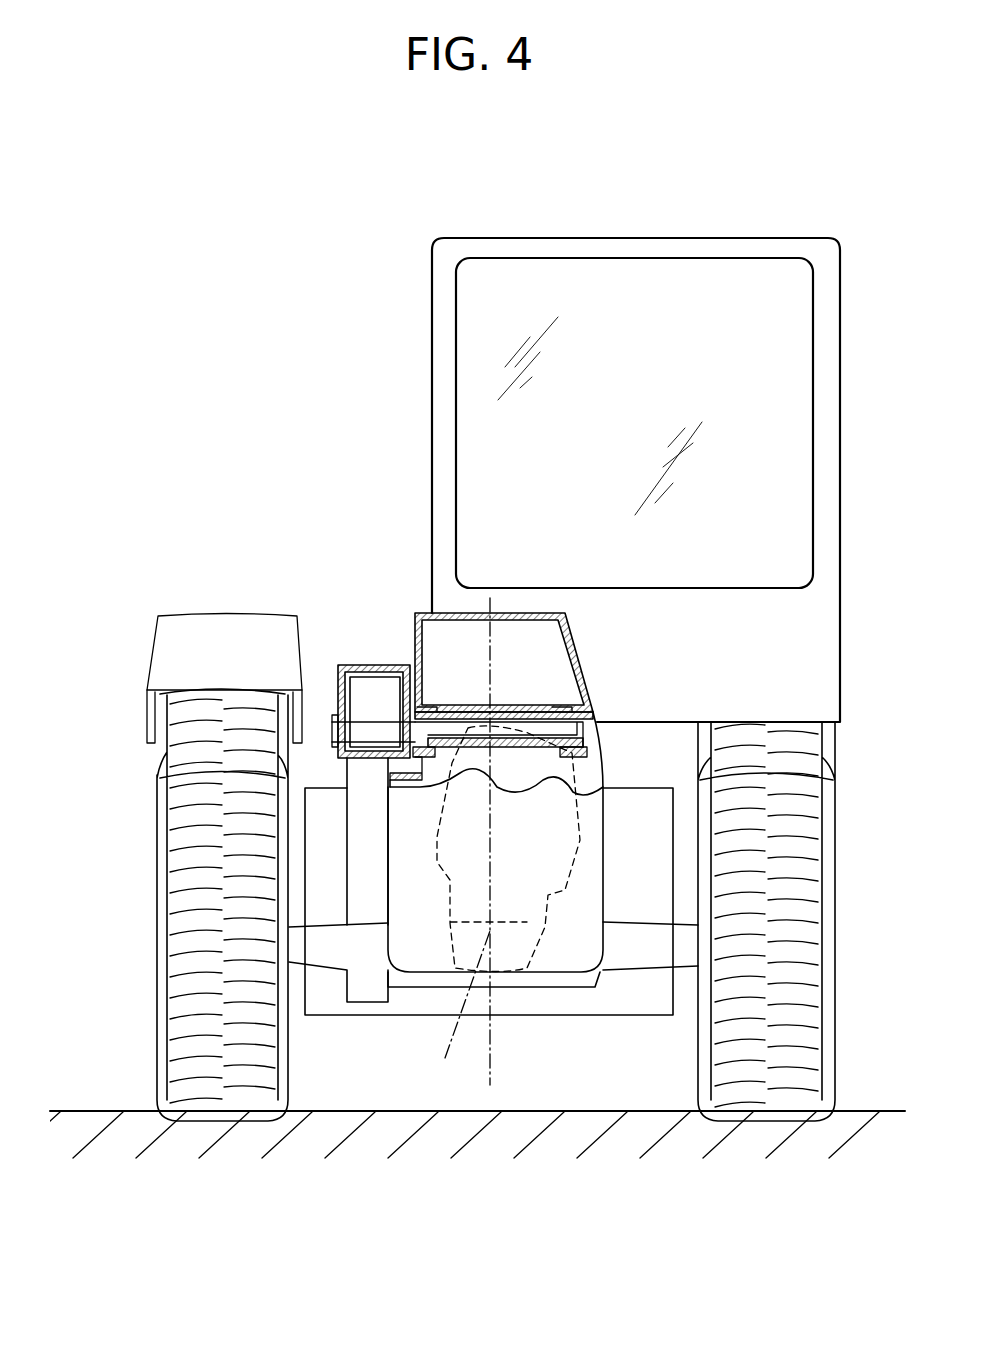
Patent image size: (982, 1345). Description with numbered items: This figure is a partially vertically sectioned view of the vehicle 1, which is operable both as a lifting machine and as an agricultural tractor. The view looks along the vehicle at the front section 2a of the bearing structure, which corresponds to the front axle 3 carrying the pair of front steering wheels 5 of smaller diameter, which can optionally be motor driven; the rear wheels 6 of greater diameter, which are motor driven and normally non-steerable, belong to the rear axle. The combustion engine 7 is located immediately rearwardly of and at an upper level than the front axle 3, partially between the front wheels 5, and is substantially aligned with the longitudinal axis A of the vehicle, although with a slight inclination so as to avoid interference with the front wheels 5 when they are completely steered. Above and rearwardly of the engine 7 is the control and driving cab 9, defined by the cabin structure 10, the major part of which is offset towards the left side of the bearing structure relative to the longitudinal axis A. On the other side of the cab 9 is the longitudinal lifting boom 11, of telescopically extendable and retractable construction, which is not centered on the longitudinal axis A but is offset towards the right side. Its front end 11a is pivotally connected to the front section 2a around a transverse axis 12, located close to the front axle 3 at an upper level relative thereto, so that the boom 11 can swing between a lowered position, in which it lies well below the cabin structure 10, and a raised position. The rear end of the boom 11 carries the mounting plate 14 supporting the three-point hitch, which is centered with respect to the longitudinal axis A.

The vehicle 1 is at (318, 306).
The front section 2a is at (415, 978).
The front axle 3 is at (632, 967).
The front steering wheels 5 is at (190, 926).
The rear wheels 6 is at (203, 731).
The combustion engine 7 is at (522, 906).
The control and driving cab 9 is at (680, 398).
The cabin structure 10 is at (779, 238).
The lifting boom 11 is at (338, 665).
The front end of the lifting boom 11a is at (368, 665).
The transverse axis 12 is at (552, 706).
The mounting plate 14 is at (641, 835).
The longitudinal axis A is at (457, 846).